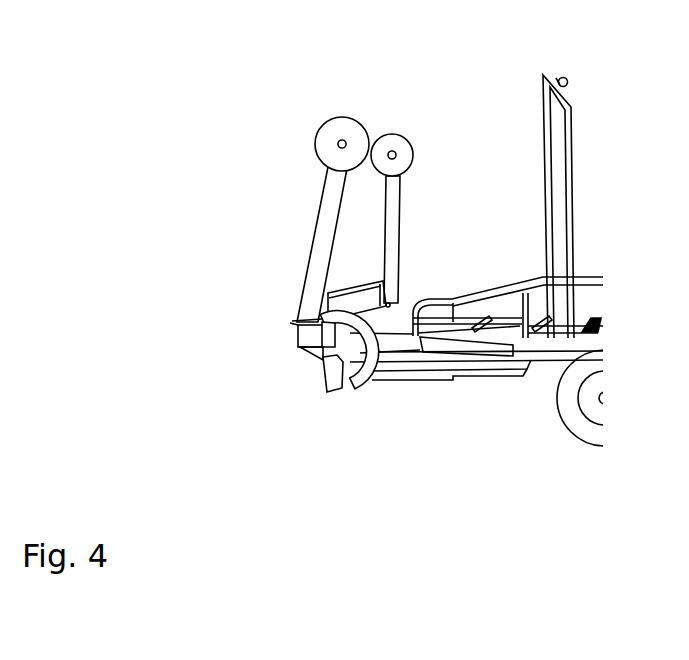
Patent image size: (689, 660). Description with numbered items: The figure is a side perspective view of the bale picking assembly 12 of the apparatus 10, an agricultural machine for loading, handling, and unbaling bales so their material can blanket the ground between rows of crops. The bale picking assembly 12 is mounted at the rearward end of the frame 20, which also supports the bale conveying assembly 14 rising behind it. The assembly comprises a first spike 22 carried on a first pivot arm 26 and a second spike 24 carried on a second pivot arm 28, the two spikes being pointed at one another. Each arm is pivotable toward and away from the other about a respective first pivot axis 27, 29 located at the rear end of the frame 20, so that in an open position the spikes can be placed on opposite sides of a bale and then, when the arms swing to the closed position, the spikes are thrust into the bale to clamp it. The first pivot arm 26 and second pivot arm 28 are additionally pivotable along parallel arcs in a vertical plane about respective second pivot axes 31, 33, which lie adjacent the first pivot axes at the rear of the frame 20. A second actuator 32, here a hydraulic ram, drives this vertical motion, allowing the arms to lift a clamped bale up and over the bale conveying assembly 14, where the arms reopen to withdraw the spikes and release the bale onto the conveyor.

The apparatus 10 is at (392, 435).
The bale picking assembly 12 is at (353, 87).
The bale conveying assembly 14 is at (611, 65).
The frame 20 is at (543, 367).
The first spike 22 is at (318, 130).
The second spike 24 is at (400, 135).
The first pivot arm 26 is at (315, 243).
The first pivot axis 27 is at (292, 322).
The second pivot arm 28 is at (398, 203).
The first pivot axis 29 is at (380, 281).
The second pivot axis 31 is at (317, 357).
The second actuator 32 is at (427, 342).
The second pivot axis 33 is at (392, 332).